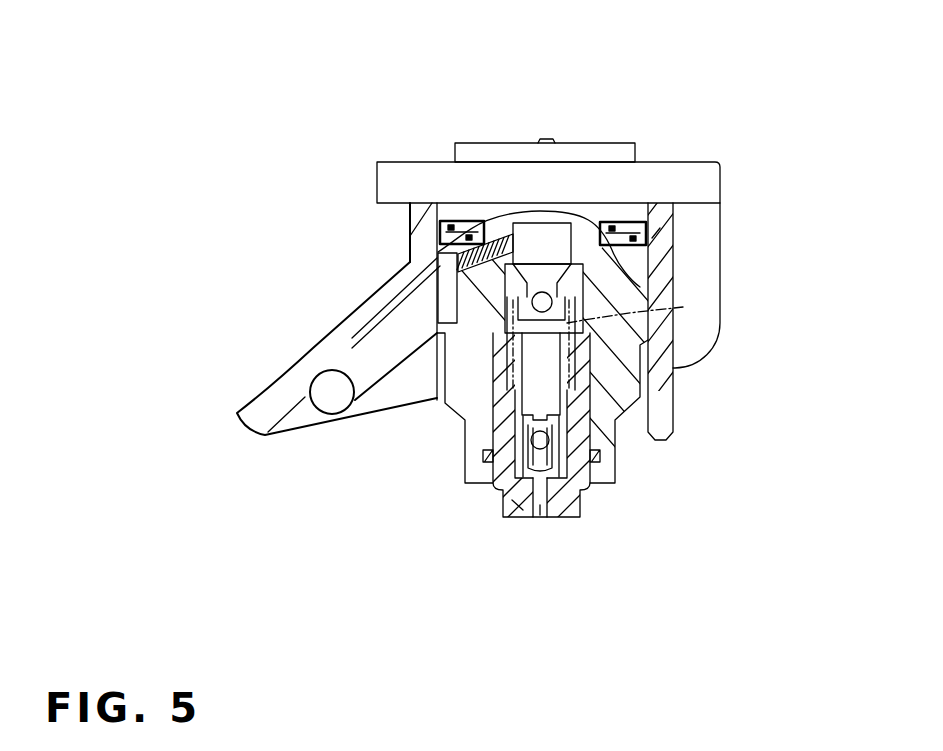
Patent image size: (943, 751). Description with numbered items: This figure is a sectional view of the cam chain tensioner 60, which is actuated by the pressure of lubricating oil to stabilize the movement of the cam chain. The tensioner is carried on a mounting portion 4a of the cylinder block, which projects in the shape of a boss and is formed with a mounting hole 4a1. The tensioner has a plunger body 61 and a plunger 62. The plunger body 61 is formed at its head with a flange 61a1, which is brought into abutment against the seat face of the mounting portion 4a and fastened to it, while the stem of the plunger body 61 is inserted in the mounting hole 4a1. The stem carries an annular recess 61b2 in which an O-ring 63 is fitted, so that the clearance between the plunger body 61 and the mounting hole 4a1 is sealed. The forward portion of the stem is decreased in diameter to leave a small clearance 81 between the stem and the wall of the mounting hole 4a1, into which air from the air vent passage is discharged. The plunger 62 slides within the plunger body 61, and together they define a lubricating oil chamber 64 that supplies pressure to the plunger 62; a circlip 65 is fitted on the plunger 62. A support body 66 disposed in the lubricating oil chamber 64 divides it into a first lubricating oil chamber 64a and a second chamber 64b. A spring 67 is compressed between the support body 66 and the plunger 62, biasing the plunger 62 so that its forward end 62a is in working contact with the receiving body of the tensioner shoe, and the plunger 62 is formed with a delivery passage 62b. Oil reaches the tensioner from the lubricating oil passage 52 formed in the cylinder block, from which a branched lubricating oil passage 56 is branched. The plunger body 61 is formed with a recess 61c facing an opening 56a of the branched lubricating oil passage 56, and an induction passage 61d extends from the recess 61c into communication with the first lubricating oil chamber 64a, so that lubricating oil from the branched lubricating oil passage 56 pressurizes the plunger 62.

The cam chain tensioner 60 is at (654, 99).
The flange 61a1 is at (712, 190).
The opening of the branched lubricating oil passage 56a is at (438, 258).
The branched lubricating oil passage 56 is at (358, 358).
The lubricating oil passage 52 is at (328, 402).
The plunger body 61 is at (612, 345).
The recess 61c is at (447, 303).
The induction passage 61d is at (513, 235).
The support body 66 is at (648, 272).
The O-ring 63 is at (605, 228).
The annular recess 61b2 is at (660, 228).
The first lubricating oil chamber 64a is at (547, 240).
The lubricating oil chamber 64 is at (568, 212).
The spring 67 is at (556, 306).
The mounting hole 4a1 is at (648, 270).
The second chamber 64b is at (592, 377).
The circlip 65 is at (600, 460).
The plunger 62 is at (558, 497).
The forward end 62a is at (522, 507).
The delivery passage 62b is at (539, 512).
The mounting portion 4a is at (667, 405).
The clearance 81 is at (695, 370).